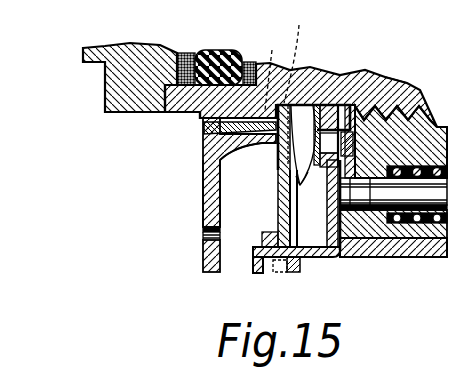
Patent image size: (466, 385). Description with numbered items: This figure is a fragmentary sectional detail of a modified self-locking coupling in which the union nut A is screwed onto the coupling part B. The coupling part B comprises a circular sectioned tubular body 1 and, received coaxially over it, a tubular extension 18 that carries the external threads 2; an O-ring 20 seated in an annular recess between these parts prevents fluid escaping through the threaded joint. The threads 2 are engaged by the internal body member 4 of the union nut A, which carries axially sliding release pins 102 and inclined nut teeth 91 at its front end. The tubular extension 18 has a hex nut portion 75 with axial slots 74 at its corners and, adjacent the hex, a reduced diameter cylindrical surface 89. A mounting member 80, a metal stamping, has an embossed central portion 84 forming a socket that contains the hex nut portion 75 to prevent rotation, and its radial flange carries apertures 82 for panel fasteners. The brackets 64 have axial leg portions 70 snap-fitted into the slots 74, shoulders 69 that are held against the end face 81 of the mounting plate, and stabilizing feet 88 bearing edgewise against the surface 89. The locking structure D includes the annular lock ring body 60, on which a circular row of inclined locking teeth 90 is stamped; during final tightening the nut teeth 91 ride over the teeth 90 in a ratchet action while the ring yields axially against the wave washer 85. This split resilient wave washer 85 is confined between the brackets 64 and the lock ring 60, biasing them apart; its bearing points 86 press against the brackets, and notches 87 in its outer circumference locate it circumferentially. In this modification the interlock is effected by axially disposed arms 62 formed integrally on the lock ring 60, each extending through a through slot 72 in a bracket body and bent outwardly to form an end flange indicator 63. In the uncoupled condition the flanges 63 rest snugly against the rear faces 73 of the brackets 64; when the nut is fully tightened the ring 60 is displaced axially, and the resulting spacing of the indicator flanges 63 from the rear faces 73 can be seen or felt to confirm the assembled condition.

The tubular body 1 is at (106, 82).
The external threads 2 is at (412, 118).
The internal body member 4 is at (433, 143).
The tubular extension 18 is at (395, 98).
The O-ring 20 is at (217, 50).
The annular lock ring body 60 is at (338, 188).
The interlock arms 62 is at (288, 272).
The end flange indicators 63 is at (258, 273).
The brackets 64 is at (289, 222).
The shoulders 69 is at (272, 50).
The leg portions 70 is at (205, 133).
The through slot 72 is at (300, 258).
The rear faces 73 is at (290, 232).
The axial slots 74 is at (204, 152).
The hex nut portion 75 is at (190, 118).
The mounting member 80 is at (205, 228).
The end face 81 is at (273, 160).
The apertures 82 is at (210, 252).
The embossed central portion 84 is at (204, 186).
The wave washer 85 is at (320, 104).
The bearing points 86 is at (307, 110).
The notches 87 is at (297, 178).
The stabilizing feet 88 is at (279, 97).
The reduced diameter cylindrical surface 89 is at (311, 120).
The inclined locking teeth 90 is at (343, 104).
The nut teeth 91 is at (350, 143).
The release pins 102 is at (383, 199).
The union nut A is at (404, 257).
The coupling part B is at (122, 115).
The locking structure D is at (312, 257).